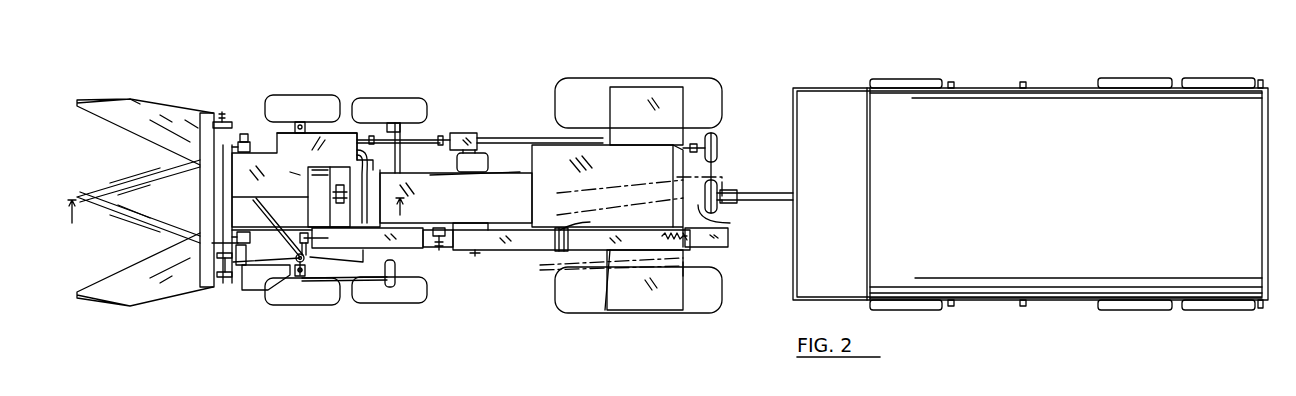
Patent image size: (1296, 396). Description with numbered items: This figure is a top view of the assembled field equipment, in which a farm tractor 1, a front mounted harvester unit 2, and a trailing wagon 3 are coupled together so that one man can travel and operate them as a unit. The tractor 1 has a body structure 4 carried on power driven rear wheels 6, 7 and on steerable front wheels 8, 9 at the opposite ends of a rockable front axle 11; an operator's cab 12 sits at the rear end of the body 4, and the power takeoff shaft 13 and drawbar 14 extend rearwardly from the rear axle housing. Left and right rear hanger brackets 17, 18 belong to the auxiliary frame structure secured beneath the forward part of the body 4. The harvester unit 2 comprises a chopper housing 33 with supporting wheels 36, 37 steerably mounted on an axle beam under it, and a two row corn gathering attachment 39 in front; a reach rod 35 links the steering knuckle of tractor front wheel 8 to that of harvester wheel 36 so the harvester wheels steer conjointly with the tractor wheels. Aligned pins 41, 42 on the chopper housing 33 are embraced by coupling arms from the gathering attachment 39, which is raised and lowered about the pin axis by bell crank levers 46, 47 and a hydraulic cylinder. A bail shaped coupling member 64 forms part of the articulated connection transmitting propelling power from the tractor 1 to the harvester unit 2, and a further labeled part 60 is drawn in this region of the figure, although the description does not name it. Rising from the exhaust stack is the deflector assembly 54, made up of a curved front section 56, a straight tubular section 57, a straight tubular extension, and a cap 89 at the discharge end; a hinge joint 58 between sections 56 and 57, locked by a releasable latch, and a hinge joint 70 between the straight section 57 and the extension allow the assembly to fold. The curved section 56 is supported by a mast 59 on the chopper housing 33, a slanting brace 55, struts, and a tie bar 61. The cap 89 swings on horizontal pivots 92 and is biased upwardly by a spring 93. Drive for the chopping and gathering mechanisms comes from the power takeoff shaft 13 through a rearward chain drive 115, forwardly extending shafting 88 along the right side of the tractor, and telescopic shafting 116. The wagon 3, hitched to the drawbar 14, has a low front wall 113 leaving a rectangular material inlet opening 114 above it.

The farm tractor 1 is at (503, 120).
The front mounted harvester unit 2 is at (250, 108).
The trailing wagon 3 is at (1007, 178).
The body structure 4 is at (512, 180).
The rear wheel 6 is at (595, 308).
The rear wheel 7 is at (585, 88).
The steerable front wheel 8 is at (395, 291).
The steerable front wheel 9 is at (400, 104).
The rockable front axle 11 is at (401, 157).
The operator's cab 12 is at (250, 217).
The power takeoff shaft 13 is at (726, 219).
The drawbar 14 is at (722, 193).
The left rear hanger bracket 17 is at (475, 257).
The right rear hanger bracket 18 is at (480, 156).
The chopper housing 33 is at (340, 134).
The reach rod 35 is at (347, 294).
The supporting wheel 36 is at (308, 296).
The supporting wheel 37 is at (305, 103).
The two row corn gathering attachment 39 is at (147, 100).
The pin 41 is at (247, 238).
The pin 42 is at (249, 147).
The bell crank lever 46 is at (220, 284).
The bell crank lever 47 is at (217, 121).
The deflector assembly 54 is at (527, 258).
The slanting brace 55 is at (420, 230).
The curved front section 56 is at (405, 243).
The straight tubular section 57 is at (498, 251).
The hinge joint 58 is at (455, 251).
The mast 59 is at (300, 266).
The hydraulic cylinder 60 is at (344, 197).
The tie bar 61 is at (328, 240).
The bail shaped coupling member 64 is at (357, 173).
The hinge joint 70 is at (558, 232).
The forwardly extending shafting 88 is at (532, 137).
The cap 89 is at (730, 238).
The horizontal pivot 92 is at (687, 237).
The spring 93 is at (672, 235).
The low front wall 113 is at (793, 291).
The material inlet opening 114 is at (860, 232).
The rearward chain drive 115 is at (716, 150).
The telescopic shafting 116 is at (423, 138).